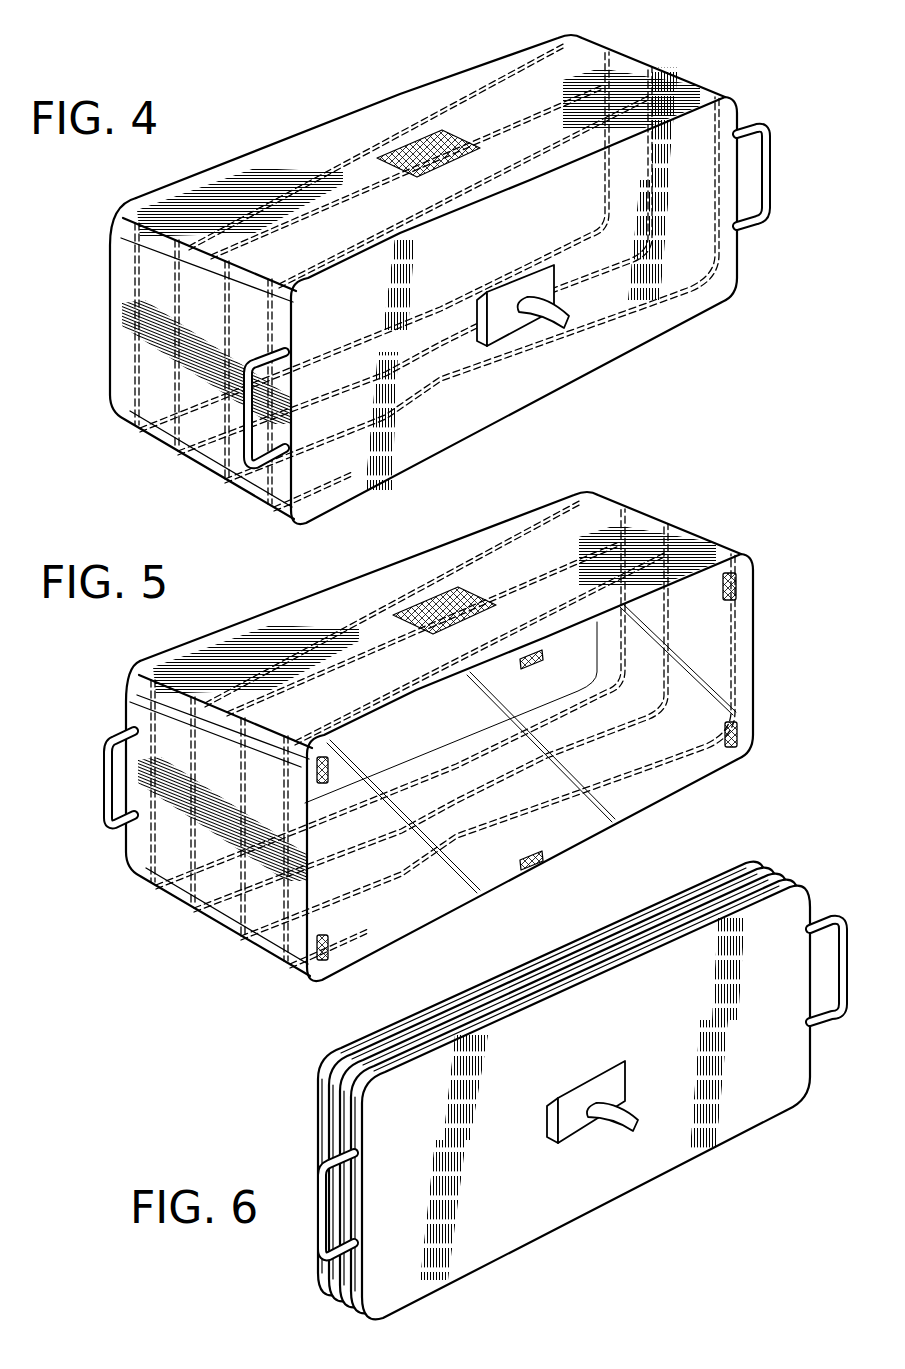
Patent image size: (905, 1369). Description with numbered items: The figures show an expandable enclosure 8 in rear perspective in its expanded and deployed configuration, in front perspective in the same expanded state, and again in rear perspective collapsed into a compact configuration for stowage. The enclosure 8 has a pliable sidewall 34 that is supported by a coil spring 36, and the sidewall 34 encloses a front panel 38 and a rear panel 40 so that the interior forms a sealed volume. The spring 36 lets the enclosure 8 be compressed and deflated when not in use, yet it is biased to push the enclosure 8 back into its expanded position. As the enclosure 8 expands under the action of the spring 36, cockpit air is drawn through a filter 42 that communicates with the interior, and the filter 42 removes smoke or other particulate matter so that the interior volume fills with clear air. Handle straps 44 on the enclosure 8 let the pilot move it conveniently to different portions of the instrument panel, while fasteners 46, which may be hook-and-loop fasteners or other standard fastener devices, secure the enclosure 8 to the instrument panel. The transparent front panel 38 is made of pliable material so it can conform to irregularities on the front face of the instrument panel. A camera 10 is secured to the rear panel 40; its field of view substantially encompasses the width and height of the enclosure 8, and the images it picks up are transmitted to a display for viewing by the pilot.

In FIG. 4, the enclosure 8 is at (265, 118).
In FIG. 5, the enclosure 8 is at (665, 500).
In FIG. 6, the enclosure 8 is at (664, 1204).
In FIG. 4, the camera 10 is at (507, 327).
In FIG. 6, the camera 10 is at (573, 1128).
In FIG. 4, the pliable sidewall 34 is at (677, 72).
In FIG. 4, the coil spring 36 is at (717, 124).
In FIG. 4, the front panel 38 is at (110, 296).
In FIG. 5, the front panel 38 is at (745, 648).
In FIG. 4, the rear panel 40 is at (723, 282).
In FIG. 6, the rear panel 40 is at (762, 1102).
In FIG. 4, the filter 42 is at (415, 143).
In FIG. 5, the filter 42 is at (435, 597).
In FIG. 4, the handle straps 44 is at (766, 181).
In FIG. 5, the handle straps 44 is at (118, 773).
In FIG. 6, the handle straps 44 is at (582, 1088).
In FIG. 5, the fasteners 46 is at (738, 585).